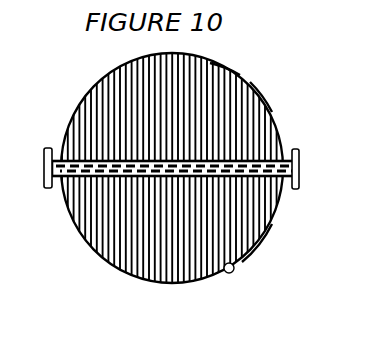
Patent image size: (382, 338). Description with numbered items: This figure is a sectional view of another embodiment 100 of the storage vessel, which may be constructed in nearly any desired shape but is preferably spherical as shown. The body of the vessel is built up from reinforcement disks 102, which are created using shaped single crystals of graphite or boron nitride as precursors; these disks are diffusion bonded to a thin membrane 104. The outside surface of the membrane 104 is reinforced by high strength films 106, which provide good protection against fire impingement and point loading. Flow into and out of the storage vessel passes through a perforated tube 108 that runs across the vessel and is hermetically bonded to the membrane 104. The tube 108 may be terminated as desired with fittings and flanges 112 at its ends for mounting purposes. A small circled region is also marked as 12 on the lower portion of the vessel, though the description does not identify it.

The embodiment 100 is at (92, 76).
The reinforcement disks 102 is at (231, 69).
The thin membrane 104 is at (266, 105).
The high strength films 106 is at (259, 248).
The perforated tube 108 is at (301, 161).
The fittings and flanges 112 is at (46, 156).
The storage material 12 is at (232, 275).